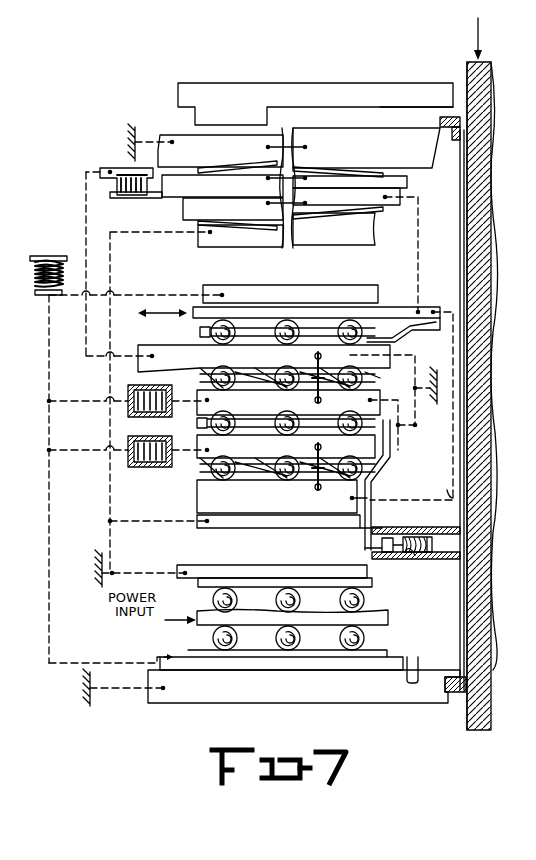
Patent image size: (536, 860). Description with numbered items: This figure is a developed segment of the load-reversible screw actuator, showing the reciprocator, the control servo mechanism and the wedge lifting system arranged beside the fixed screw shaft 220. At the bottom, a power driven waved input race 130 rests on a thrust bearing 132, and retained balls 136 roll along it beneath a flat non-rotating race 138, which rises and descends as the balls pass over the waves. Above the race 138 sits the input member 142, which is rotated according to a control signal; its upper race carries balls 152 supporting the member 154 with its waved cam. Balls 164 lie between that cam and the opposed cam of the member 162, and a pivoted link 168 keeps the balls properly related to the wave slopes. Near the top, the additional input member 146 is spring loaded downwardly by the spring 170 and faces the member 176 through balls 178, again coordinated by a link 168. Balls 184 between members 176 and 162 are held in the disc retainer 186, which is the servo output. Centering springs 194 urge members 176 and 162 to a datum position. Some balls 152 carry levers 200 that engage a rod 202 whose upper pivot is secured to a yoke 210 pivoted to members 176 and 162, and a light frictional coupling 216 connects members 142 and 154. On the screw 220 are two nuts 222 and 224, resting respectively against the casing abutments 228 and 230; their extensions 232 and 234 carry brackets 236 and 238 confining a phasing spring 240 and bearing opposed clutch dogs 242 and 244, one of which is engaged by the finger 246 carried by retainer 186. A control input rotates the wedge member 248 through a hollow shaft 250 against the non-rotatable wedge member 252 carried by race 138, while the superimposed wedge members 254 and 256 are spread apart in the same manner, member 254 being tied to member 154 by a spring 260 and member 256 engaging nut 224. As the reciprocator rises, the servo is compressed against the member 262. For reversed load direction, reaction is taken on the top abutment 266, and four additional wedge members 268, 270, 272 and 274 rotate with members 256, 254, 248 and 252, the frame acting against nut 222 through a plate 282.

The waved input race 130 is at (390, 615).
The thrust bearing 132 is at (366, 637).
The retained balls 136 is at (366, 598).
The flat non-rotating race 138 is at (212, 527).
The input member 142 is at (382, 306).
The additional input member 146 is at (282, 496).
The balls or rollers 152 is at (210, 328).
The member 154 is at (264, 358).
The member 162 is at (288, 402).
The balls 164 is at (216, 366).
The pivoted link 168 is at (315, 390).
The spring 170 is at (32, 287).
The member 176 is at (286, 446).
The balls 178 is at (205, 474).
The balls 184 is at (368, 406).
The retainer 186 is at (372, 517).
The centering springs 194 is at (144, 384).
The lever 200 is at (330, 353).
The rod 202 is at (418, 370).
The yoke 210 is at (400, 438).
The light frictional coupling 216 is at (408, 335).
The screw shaft 220 is at (478, 718).
The nut 222 is at (460, 694).
The nut 224 is at (439, 125).
The abutment 228 is at (445, 703).
The abutment 230 is at (445, 106).
The extension 232 is at (461, 567).
The extension 234 is at (411, 406).
The bracket 236 is at (420, 561).
The bracket 238 is at (407, 527).
The spring 240 is at (428, 544).
The clutch dog 242 is at (372, 554).
The clutch dog 244 is at (372, 498).
The finger 246 is at (372, 530).
The wedge member 248 is at (346, 203).
The hollow shaft 250 is at (417, 243).
The wedge member 252 is at (334, 229).
The wedge member 254 is at (408, 184).
The wedge member 256 is at (366, 152).
The spring 260 is at (127, 196).
The member 262 is at (290, 294).
The abutment 266 is at (315, 104).
The wedge member 268 is at (220, 151).
The wedge member 270 is at (222, 179).
The wedge member 272 is at (233, 214).
The wedge member 274 is at (240, 236).
The plate 282 is at (177, 657).